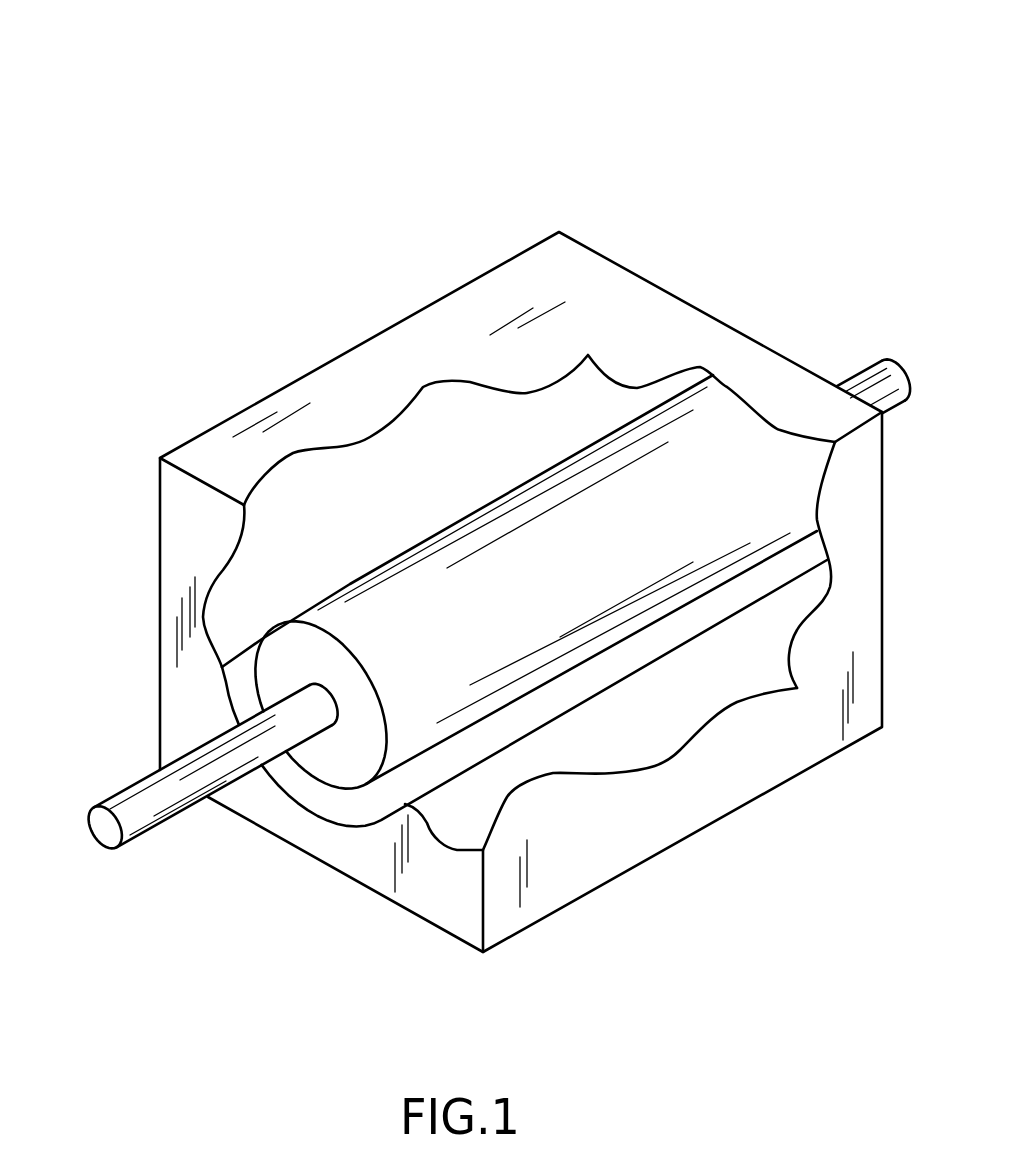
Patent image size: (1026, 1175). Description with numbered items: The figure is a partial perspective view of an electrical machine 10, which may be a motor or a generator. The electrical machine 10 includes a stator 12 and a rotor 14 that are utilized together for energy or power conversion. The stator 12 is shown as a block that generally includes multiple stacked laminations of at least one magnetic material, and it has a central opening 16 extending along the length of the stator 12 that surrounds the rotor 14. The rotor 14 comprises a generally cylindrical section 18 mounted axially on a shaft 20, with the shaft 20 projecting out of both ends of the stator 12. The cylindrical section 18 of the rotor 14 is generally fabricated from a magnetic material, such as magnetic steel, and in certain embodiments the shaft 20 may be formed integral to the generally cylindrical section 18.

The electrical machine 10 is at (152, 57).
The stator 12 is at (799, 630).
The rotor 14 is at (592, 668).
The central opening 16 is at (298, 793).
The cylindrical section 18 is at (432, 600).
The shaft 20 is at (125, 832).